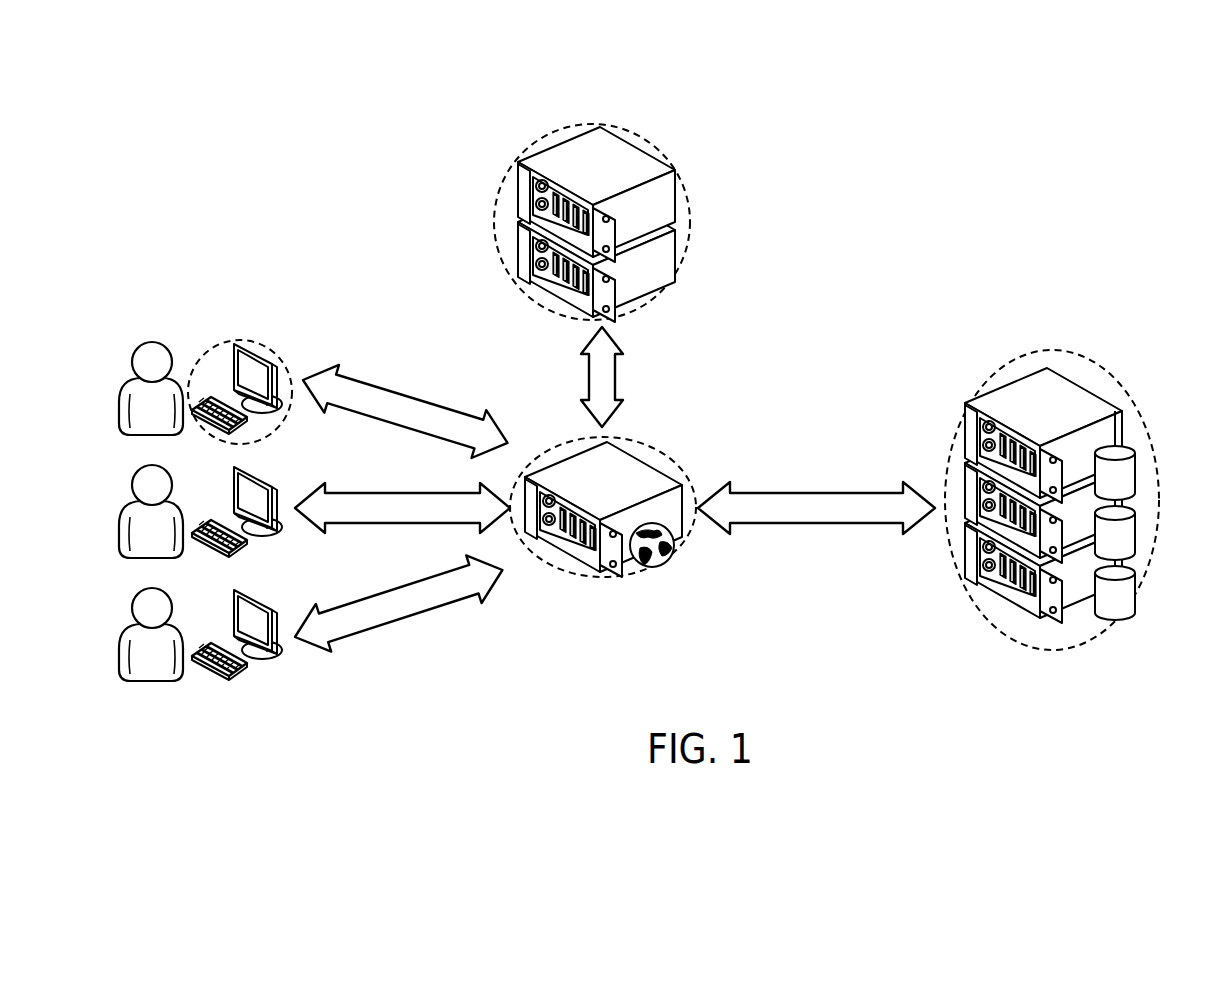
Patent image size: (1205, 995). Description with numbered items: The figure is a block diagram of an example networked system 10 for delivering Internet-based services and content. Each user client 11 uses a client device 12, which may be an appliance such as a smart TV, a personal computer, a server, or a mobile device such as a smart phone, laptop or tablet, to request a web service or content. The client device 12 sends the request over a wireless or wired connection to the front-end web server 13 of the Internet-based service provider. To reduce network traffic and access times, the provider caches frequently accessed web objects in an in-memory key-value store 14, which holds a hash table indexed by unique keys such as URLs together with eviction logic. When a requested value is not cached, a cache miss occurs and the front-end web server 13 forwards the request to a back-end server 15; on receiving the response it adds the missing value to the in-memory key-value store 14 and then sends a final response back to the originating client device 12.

The networked system 10 is at (808, 96).
The user client 11 is at (150, 337).
The client device 12 is at (241, 340).
The front-end web server 13 is at (662, 457).
The in-memory key-value store 14 is at (629, 133).
The back-end server 15 is at (1058, 353).